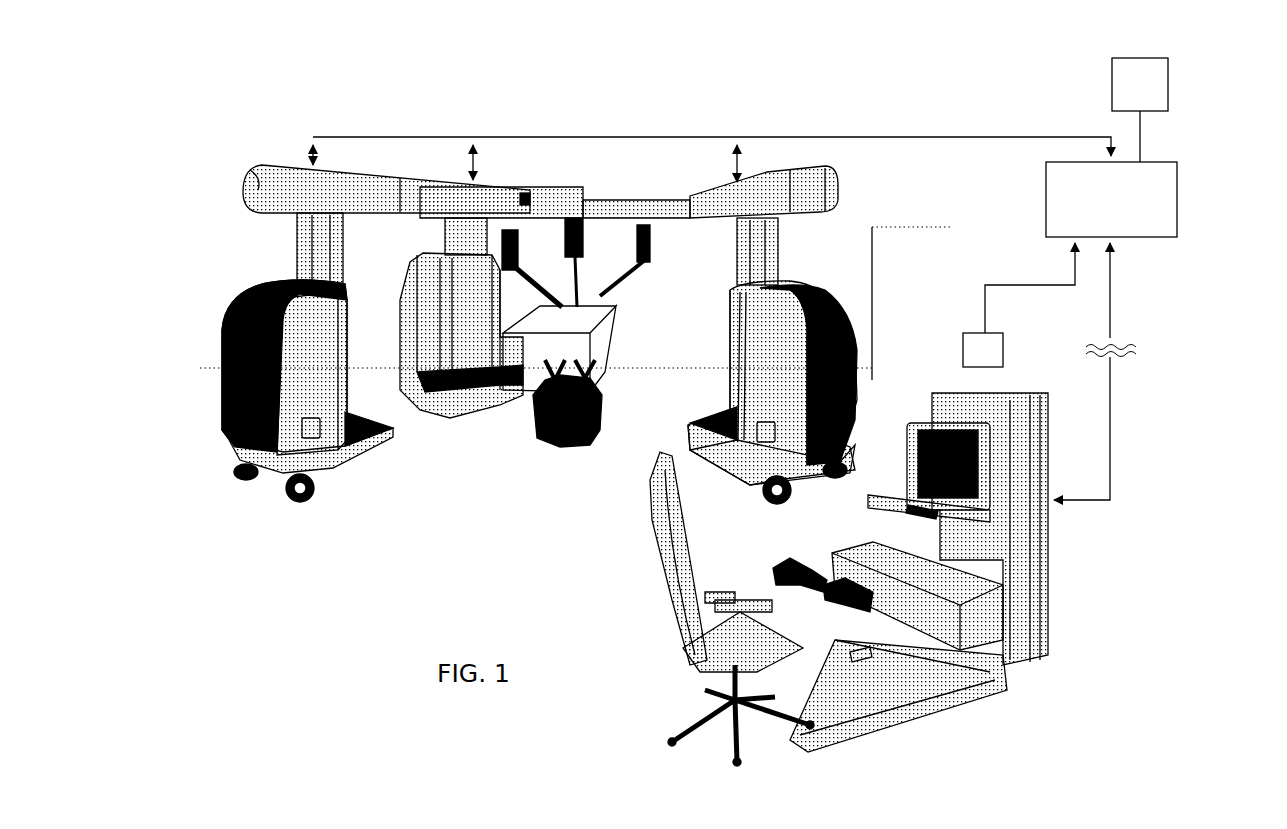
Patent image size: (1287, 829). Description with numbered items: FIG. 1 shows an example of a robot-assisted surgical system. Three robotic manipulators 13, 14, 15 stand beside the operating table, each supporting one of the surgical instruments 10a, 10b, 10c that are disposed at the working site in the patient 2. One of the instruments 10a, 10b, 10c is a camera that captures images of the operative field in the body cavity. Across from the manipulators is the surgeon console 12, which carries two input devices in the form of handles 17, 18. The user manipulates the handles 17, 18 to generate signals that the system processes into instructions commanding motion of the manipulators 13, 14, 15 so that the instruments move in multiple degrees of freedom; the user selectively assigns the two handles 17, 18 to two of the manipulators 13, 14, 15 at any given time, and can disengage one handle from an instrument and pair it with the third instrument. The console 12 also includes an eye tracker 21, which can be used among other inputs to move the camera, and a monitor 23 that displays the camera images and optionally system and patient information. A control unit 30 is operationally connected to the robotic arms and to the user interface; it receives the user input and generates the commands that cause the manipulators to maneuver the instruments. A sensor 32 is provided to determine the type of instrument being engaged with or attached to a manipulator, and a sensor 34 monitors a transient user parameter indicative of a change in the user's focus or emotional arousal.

The patient on operating table 2 is at (552, 316).
The surgical instrument 10a is at (610, 288).
The surgical instrument 10b is at (584, 248).
The surgical instrument 10c is at (520, 270).
The surgeon console 12 is at (1069, 652).
The robotic manipulator 13 is at (241, 181).
The robotic manipulator 14 is at (500, 187).
The robotic manipulator 15 is at (794, 183).
The handle 17 is at (797, 562).
The handle 18 is at (810, 593).
The eye tracker 21 is at (901, 493).
The monitor 23 is at (920, 430).
The control unit 30 is at (1177, 180).
The sensor 32 is at (1168, 83).
The sensor 34 is at (975, 333).